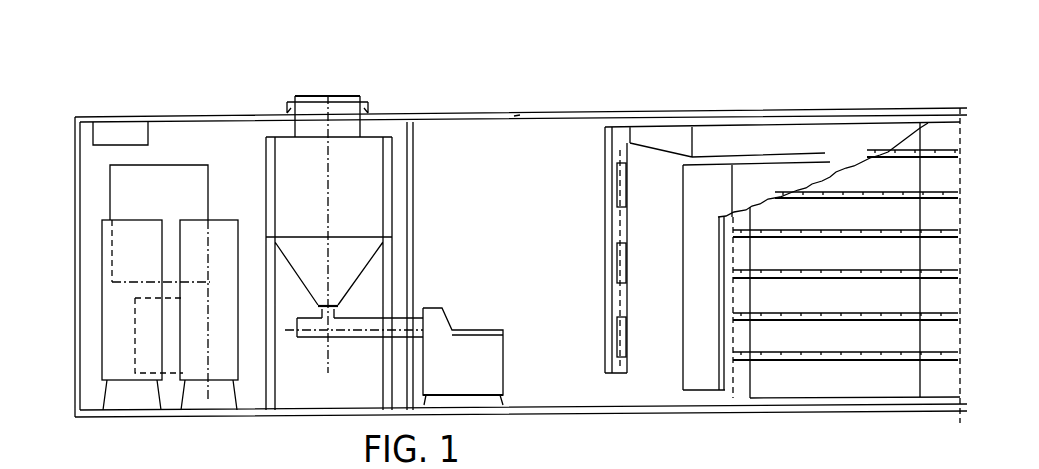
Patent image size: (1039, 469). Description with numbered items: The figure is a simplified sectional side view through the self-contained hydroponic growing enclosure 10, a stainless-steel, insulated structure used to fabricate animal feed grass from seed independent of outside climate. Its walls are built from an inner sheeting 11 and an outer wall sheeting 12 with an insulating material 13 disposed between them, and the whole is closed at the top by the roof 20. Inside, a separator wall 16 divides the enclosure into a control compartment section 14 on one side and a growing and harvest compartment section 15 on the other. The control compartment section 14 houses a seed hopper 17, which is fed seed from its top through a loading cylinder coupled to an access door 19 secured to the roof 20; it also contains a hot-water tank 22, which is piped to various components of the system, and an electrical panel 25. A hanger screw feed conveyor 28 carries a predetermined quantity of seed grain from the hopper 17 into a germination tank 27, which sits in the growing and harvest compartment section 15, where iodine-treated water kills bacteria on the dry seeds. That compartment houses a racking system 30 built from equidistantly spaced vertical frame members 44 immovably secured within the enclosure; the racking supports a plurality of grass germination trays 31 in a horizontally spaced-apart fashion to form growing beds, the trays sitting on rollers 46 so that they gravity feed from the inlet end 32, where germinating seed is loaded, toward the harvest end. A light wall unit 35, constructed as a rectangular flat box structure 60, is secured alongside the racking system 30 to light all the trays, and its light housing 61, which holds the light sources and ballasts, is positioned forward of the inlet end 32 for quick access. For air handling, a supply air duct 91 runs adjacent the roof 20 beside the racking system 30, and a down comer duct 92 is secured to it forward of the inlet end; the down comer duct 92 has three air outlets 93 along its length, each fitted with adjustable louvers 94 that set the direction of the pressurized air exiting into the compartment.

The self-contained hydroponic growing enclosure 10 is at (575, 67).
The inner sheeting 11 is at (530, 118).
The outer wall sheeting 12 is at (467, 112).
The insulating material 13 is at (516, 110).
The control compartment section 14 is at (222, 152).
The growing and harvest compartment section 15 is at (582, 153).
The separator wall 16 is at (415, 180).
The seed hopper 17 is at (367, 208).
The access door 19 is at (340, 95).
The roof 20 is at (145, 117).
The hot-water tank 22 is at (222, 240).
The electrical panel 25 is at (180, 180).
The germination tank 27 is at (485, 368).
The hanger screw feed conveyor 28 is at (362, 326).
The racking system 30 is at (923, 293).
The grass germination tray 31 is at (875, 378).
The inlet end 32 is at (713, 358).
The light wall unit 35 is at (700, 312).
The vertical frame member 44 is at (922, 377).
The roller 46 is at (762, 355).
The rectangular flat box structure 60 is at (833, 160).
The light housing 61 is at (690, 260).
The supply air duct 91 is at (728, 142).
The down comer duct 92 is at (610, 220).
The air outlet 93 is at (615, 173).
The adjustable louver 94 is at (623, 197).